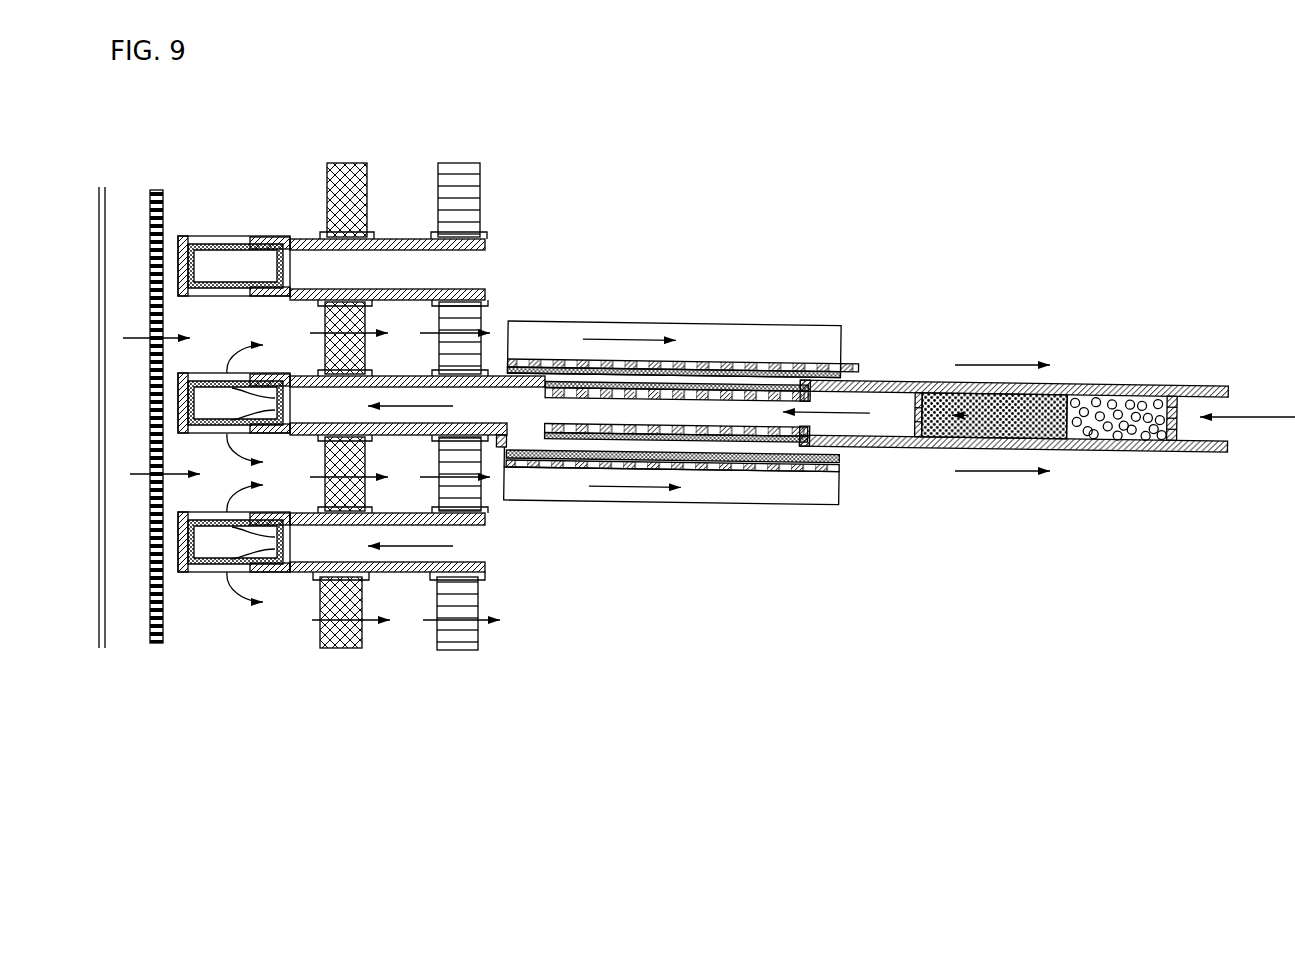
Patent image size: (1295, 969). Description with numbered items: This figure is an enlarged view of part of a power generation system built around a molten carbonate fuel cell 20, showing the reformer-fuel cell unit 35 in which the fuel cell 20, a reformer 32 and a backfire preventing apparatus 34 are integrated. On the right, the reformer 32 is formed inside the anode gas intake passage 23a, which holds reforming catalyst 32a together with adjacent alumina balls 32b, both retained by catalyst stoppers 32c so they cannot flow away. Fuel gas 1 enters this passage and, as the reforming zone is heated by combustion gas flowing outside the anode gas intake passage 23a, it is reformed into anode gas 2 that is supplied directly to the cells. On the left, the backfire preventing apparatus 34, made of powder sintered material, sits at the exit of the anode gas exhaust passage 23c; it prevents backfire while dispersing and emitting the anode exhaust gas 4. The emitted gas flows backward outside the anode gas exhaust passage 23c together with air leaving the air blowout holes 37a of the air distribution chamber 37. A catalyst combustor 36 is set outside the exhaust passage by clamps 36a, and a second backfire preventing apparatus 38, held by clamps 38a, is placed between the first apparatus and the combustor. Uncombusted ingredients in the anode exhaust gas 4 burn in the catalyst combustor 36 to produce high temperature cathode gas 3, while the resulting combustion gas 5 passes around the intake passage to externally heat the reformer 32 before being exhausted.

The fuel gas 1 is at (1265, 417).
The anode gas 2 is at (830, 445).
The cathode gas 3 is at (630, 340).
The anode exhaust gas 4 is at (390, 413).
The combustion gas 5 is at (487, 338).
The molten carbonate fuel cell 20 is at (720, 378).
The anode gas intake passage 23a is at (895, 440).
The anode gas exhaust passage 23c is at (505, 445).
The reformer 32 is at (1073, 425).
The reforming catalyst 32a is at (1015, 435).
The alumina balls 32b is at (1110, 445).
The catalyst stoppers 32c is at (918, 445).
The backfire preventing apparatus 34 is at (218, 372).
The reformer-fuel cell unit 35 is at (893, 378).
The catalyst combustor 36 is at (468, 652).
The clamps 36a is at (432, 588).
The air distribution chamber 37 is at (125, 615).
The air blowout holes 37a is at (158, 478).
The second backfire preventing apparatus 38 is at (342, 650).
The clamps 38a is at (306, 582).